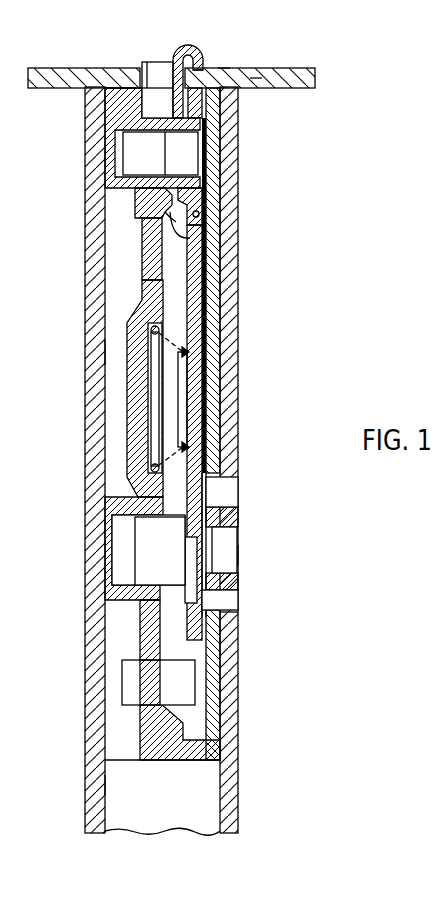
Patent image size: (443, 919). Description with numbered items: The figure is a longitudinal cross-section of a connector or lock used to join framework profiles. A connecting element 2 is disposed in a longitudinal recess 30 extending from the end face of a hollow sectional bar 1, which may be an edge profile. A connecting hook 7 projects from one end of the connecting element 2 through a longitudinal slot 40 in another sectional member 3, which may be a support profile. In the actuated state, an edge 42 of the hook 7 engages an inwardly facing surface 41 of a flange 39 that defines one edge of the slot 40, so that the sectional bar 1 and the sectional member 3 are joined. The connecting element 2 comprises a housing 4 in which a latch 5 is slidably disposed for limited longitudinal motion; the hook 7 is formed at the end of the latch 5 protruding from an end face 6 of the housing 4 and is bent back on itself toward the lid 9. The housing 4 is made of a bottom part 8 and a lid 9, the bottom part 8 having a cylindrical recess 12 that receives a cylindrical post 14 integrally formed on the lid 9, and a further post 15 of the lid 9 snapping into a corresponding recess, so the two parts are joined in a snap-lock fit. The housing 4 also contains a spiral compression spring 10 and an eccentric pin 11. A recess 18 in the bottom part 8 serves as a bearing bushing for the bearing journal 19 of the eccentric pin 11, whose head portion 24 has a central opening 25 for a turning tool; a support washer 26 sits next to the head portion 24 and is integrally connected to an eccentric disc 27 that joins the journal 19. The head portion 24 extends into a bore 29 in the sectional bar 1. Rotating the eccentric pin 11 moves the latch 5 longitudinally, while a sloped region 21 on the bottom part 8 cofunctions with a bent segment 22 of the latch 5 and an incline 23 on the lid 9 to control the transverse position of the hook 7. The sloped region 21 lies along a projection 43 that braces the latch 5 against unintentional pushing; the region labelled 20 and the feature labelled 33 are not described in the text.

The hollow sectional bar 1 is at (232, 273).
The connecting element 2 is at (180, 774).
The sectional member 3 is at (299, 63).
The housing 4 is at (120, 399).
The latch 5 is at (196, 402).
The end face 6 is at (120, 86).
The connecting hook 7 is at (174, 50).
The bottom part 8 is at (147, 263).
The lid 9 is at (213, 352).
The spiral compression spring 10 is at (150, 471).
The eccentric pin 11 is at (245, 555).
The cylindrical recess 12 is at (116, 147).
The cylindrical post 14 is at (192, 153).
The cylindrical post 15 is at (181, 687).
The recess 18 is at (116, 541).
The bearing journal 19 is at (147, 562).
The inner wall 20 is at (114, 352).
The sloped region 21 is at (136, 207).
The bent segment 22 is at (199, 213).
The incline 23 is at (208, 205).
The head portion 24 is at (230, 497).
The opening 25 is at (226, 563).
The support washer 26 is at (204, 598).
The eccentric disc 27 is at (197, 547).
The bore 29 is at (233, 608).
The longitudinal recess 30 is at (104, 784).
The neck 33 is at (146, 225).
The flange 39 is at (257, 77).
The longitudinal slot 40 is at (142, 62).
The inwardly facing surface 41 is at (224, 70).
The edge 42 is at (203, 70).
The projection 43 is at (217, 246).